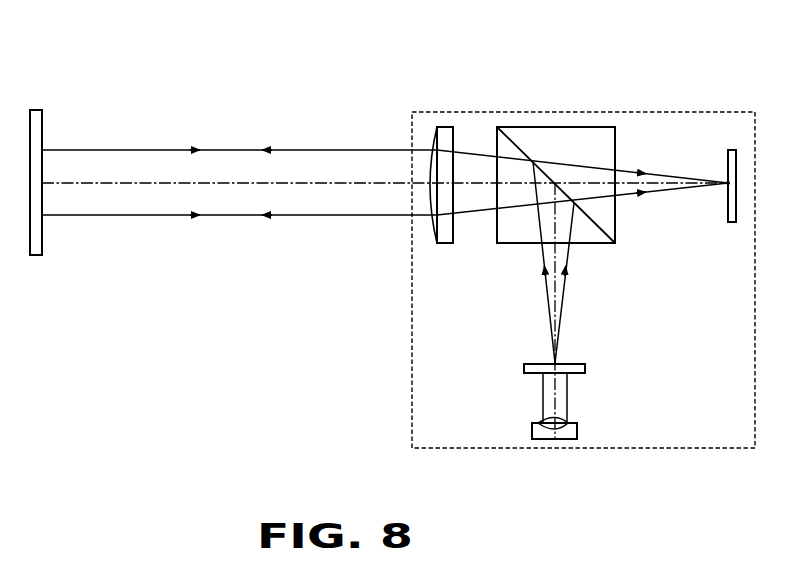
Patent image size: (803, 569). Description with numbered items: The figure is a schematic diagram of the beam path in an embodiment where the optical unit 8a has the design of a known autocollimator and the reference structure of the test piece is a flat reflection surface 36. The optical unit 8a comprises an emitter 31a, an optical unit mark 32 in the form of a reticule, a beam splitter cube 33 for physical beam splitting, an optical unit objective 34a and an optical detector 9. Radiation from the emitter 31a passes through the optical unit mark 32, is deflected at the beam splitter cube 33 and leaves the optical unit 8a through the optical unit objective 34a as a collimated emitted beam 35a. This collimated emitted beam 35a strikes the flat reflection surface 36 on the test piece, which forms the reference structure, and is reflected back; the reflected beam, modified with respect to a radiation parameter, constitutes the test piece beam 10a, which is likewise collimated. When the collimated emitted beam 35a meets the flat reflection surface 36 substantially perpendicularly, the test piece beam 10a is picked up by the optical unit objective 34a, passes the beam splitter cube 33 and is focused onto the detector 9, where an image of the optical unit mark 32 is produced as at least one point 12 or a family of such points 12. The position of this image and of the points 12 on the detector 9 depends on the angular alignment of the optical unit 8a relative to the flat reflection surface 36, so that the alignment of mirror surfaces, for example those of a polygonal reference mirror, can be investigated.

The optical unit 8a is at (393, 432).
The optical detector 9 is at (733, 163).
The test piece beam 10a is at (193, 215).
The point 12 is at (728, 183).
The emitter 31a is at (570, 433).
The optical unit mark 32 is at (533, 368).
The beam splitter cube 33 is at (594, 139).
The optical unit objective 34a is at (445, 138).
The collimated emitted beam 35a is at (266, 215).
The flat reflection surface 36 is at (37, 128).